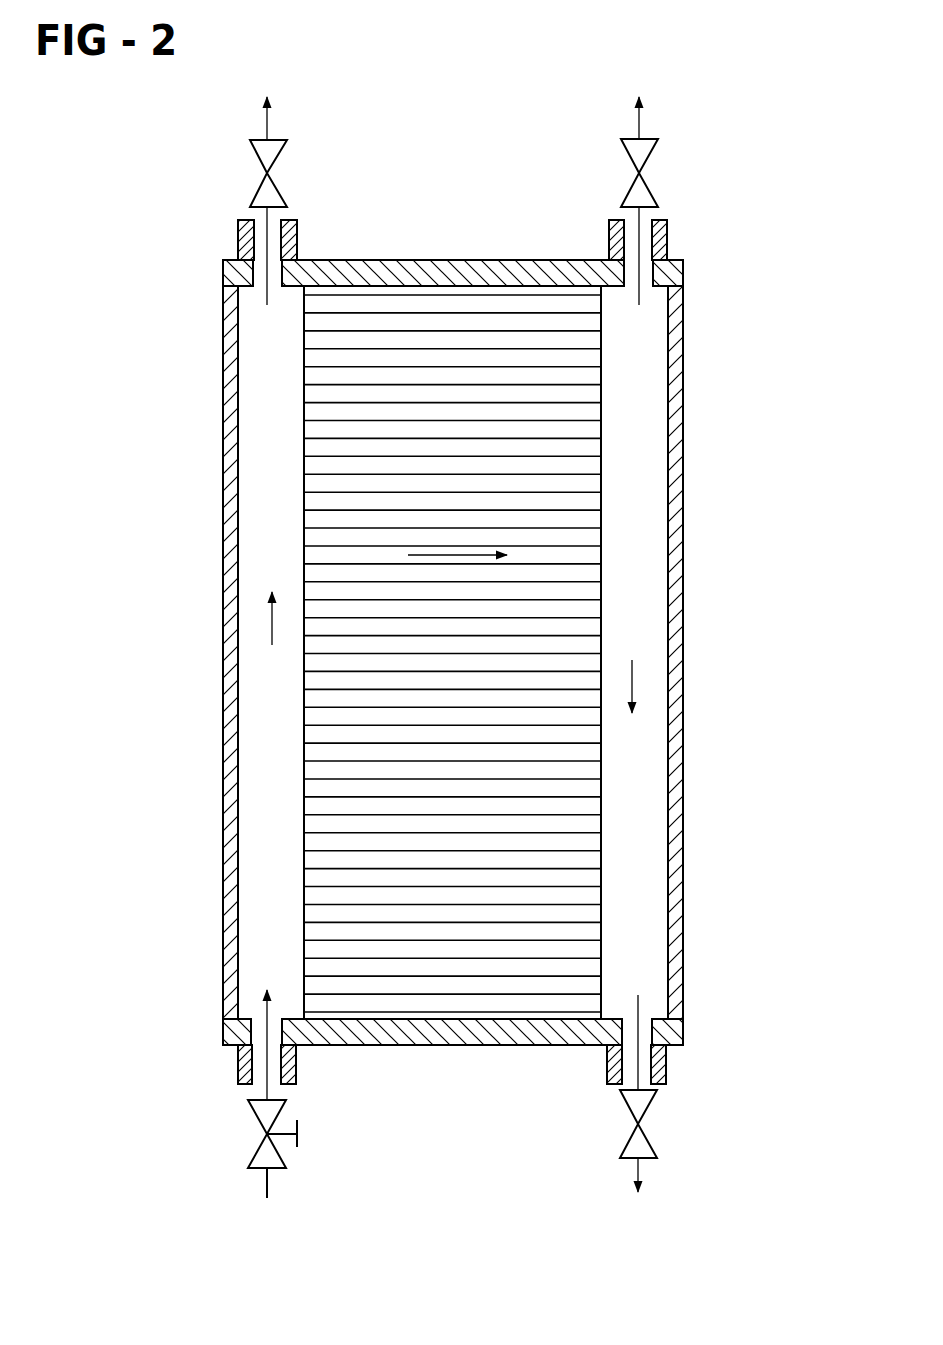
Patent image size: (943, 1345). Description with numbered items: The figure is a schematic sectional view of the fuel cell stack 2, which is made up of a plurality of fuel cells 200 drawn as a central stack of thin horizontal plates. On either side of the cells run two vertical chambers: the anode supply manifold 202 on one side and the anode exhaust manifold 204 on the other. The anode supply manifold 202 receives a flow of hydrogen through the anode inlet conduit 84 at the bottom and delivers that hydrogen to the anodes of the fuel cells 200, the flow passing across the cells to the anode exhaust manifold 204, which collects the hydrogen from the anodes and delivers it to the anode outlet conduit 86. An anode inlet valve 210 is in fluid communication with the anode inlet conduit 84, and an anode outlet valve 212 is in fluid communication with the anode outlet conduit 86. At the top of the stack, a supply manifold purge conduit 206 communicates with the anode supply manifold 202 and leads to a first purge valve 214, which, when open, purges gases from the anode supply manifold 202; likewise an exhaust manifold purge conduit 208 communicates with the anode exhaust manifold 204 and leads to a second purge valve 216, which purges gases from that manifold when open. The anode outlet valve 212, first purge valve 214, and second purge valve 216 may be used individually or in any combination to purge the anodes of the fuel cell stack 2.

The fuel cell stack 2 is at (720, 347).
The anode inlet conduit 84 is at (238, 1060).
The anode outlet conduit 86 is at (666, 1062).
The fuel cells 200 is at (590, 503).
The anode supply manifold 202 is at (273, 857).
The anode exhaust manifold 204 is at (635, 859).
The supply manifold purge conduit 206 is at (238, 243).
The exhaust manifold purge conduit 208 is at (667, 240).
The anode inlet valve 210 is at (253, 1152).
The anode outlet valve 212 is at (648, 1143).
The first purge valve 214 is at (258, 157).
The second purge valve 216 is at (650, 158).